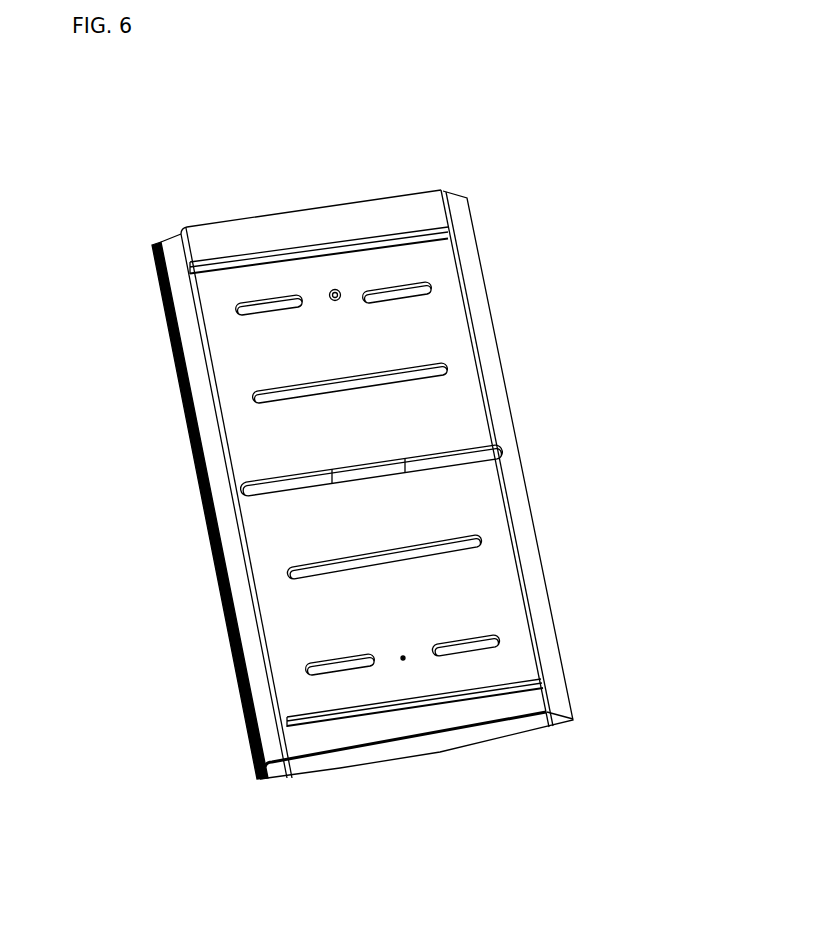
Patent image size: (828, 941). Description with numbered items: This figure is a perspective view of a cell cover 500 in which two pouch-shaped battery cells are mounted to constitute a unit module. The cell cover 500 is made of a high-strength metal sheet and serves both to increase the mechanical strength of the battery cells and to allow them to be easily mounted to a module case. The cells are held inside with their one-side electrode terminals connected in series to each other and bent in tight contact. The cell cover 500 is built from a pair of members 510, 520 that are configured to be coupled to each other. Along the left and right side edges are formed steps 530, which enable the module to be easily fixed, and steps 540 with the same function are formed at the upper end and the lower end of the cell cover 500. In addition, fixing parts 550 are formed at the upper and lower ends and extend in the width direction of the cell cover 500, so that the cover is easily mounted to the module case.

The cell cover 500 is at (118, 122).
The member 510 is at (320, 760).
The member 520 is at (415, 763).
The steps 530 is at (240, 622).
The steps 540 is at (350, 225).
The fixing parts 550 is at (512, 678).